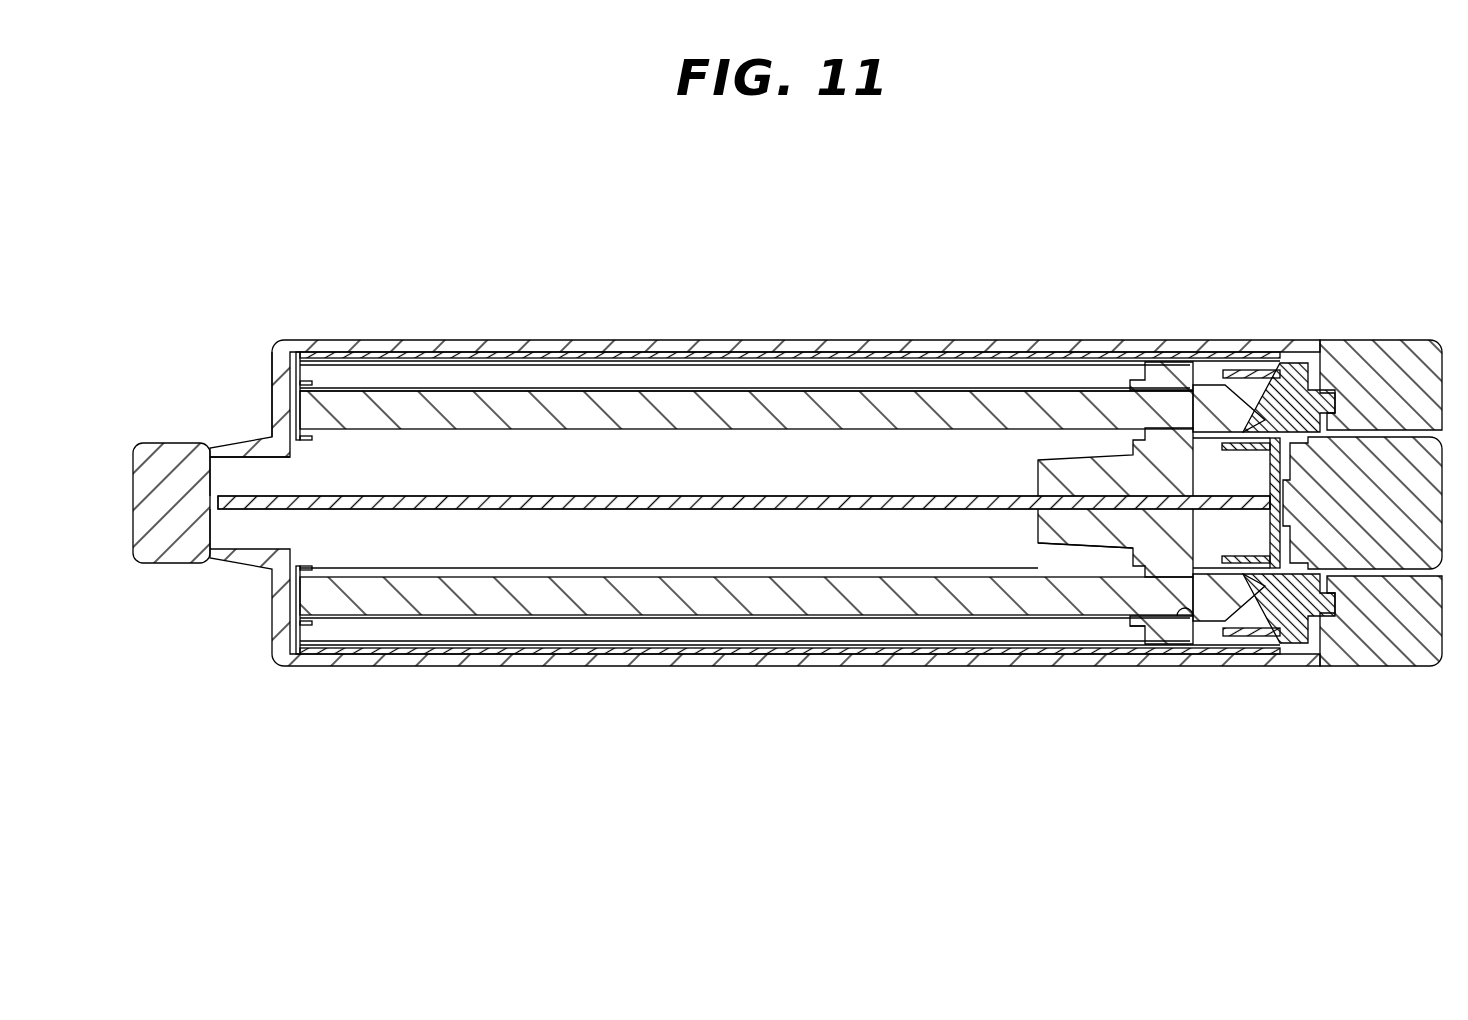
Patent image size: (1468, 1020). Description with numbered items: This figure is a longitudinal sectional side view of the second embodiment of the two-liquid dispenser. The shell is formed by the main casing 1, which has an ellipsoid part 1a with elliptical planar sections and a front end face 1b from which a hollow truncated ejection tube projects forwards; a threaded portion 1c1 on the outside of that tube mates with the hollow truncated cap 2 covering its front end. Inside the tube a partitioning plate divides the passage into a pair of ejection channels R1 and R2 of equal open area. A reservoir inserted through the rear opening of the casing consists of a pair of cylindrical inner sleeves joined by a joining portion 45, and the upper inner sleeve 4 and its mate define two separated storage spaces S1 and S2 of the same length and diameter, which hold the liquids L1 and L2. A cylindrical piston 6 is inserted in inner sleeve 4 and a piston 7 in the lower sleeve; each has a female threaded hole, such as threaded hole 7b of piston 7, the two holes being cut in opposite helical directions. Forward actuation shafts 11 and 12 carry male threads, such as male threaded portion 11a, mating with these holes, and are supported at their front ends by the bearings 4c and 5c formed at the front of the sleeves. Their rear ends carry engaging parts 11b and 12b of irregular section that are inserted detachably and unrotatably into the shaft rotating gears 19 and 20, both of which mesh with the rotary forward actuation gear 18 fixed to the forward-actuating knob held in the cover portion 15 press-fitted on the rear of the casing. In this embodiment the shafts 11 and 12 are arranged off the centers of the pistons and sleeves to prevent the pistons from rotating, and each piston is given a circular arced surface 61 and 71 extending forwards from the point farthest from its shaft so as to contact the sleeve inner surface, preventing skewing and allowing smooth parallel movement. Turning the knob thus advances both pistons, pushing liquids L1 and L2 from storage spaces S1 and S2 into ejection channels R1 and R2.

The main casing 1 is at (452, 340).
The ellipsoid part 1a is at (636, 345).
The front end face 1b is at (270, 356).
The threaded portion 1c1 is at (258, 438).
The cap 2 is at (177, 550).
The inner sleeve 4 is at (817, 352).
The bearing 4c is at (318, 435).
The bearing 5c is at (318, 572).
The piston 6 is at (1142, 373).
The piston 7 is at (1158, 632).
The threaded hole 7b is at (1205, 647).
The forward actuation shaft 11 is at (940, 388).
The male threaded portion 11a is at (887, 395).
The engaging part 11b is at (1208, 395).
The forward actuation shaft 12 is at (905, 598).
The engaging part 12b is at (1265, 650).
The cover portion 15 is at (1393, 343).
The rotary forward actuation gear 18 is at (1313, 455).
The shaft rotating gear 19 is at (1290, 365).
The shaft rotating gear 20 is at (1320, 655).
The joining portion 45 is at (563, 512).
The circular arced surface 61 is at (1060, 455).
The circular arced surface 71 is at (1073, 535).
The liquid L1 is at (553, 372).
The liquid L2 is at (465, 555).
The ejection channel R1 is at (230, 472).
The ejection channel R2 is at (250, 537).
The storage space S1 is at (740, 373).
The storage space S2 is at (710, 635).